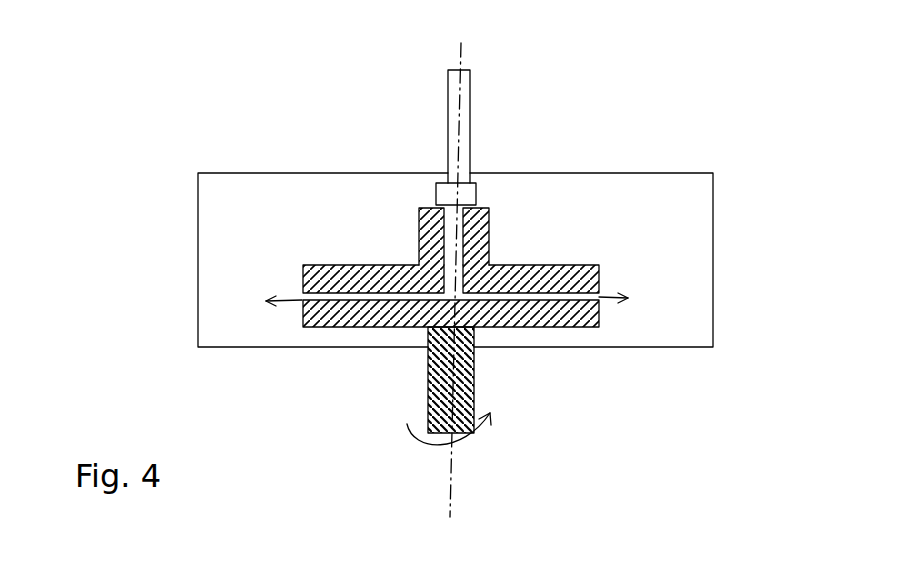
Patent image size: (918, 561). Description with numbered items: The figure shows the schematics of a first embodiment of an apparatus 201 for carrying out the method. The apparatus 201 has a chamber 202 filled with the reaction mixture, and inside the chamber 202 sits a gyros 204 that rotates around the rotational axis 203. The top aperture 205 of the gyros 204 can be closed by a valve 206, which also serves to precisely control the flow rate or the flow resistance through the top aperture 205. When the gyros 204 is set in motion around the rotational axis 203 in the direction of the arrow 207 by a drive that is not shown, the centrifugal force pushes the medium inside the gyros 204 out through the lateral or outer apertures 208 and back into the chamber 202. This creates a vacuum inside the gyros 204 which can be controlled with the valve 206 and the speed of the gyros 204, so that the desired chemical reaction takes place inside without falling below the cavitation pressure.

The apparatus 201 is at (764, 147).
The chamber 202 is at (705, 233).
The rotational axis 203 is at (452, 495).
The gyros 204 is at (553, 327).
The top aperture 205 is at (489, 220).
The valve 206 is at (468, 92).
The arrow 207 is at (492, 440).
The lateral or outer apertures 208 is at (302, 300).